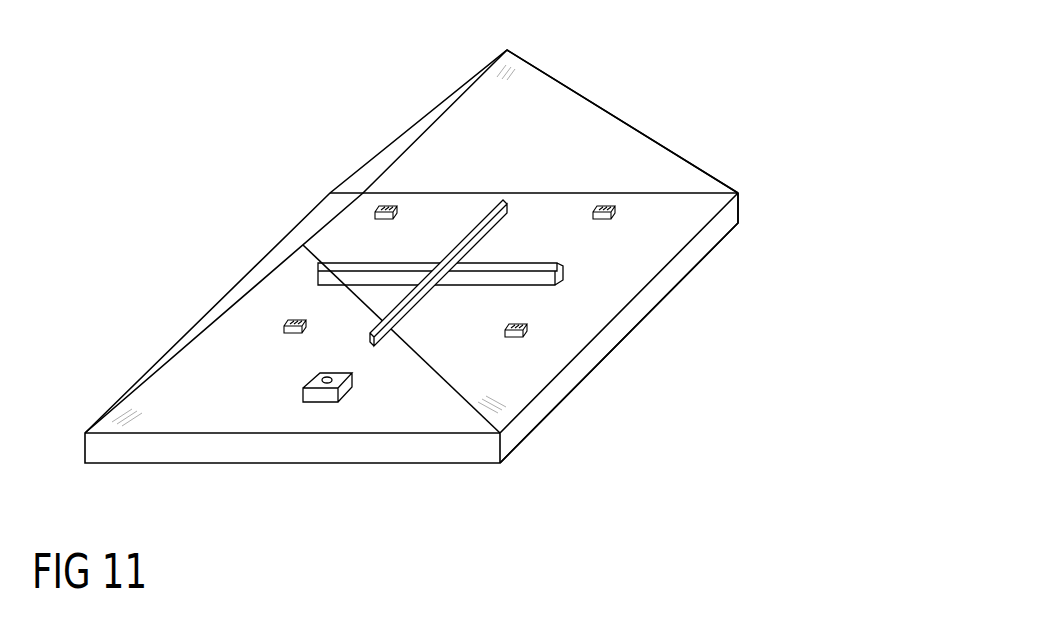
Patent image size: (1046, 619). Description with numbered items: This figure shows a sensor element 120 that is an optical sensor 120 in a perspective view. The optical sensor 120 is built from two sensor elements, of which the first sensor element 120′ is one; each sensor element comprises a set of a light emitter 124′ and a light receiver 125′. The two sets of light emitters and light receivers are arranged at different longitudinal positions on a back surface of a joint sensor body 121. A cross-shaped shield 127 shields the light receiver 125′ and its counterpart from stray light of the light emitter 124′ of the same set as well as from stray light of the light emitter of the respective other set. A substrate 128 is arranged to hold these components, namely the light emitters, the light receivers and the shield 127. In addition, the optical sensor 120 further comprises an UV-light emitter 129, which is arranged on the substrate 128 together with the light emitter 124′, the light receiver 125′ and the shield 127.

The sensor element 120 is at (722, 82).
The sensor element 120′ is at (327, 153).
The joint sensor body 121 is at (552, 90).
The substrate 128 is at (744, 209).
The cross-shaped shield 127 is at (522, 287).
The UV-light emitter 129 is at (317, 412).
The light emitter 124′ is at (367, 213).
The light receiver 125′ is at (607, 208).